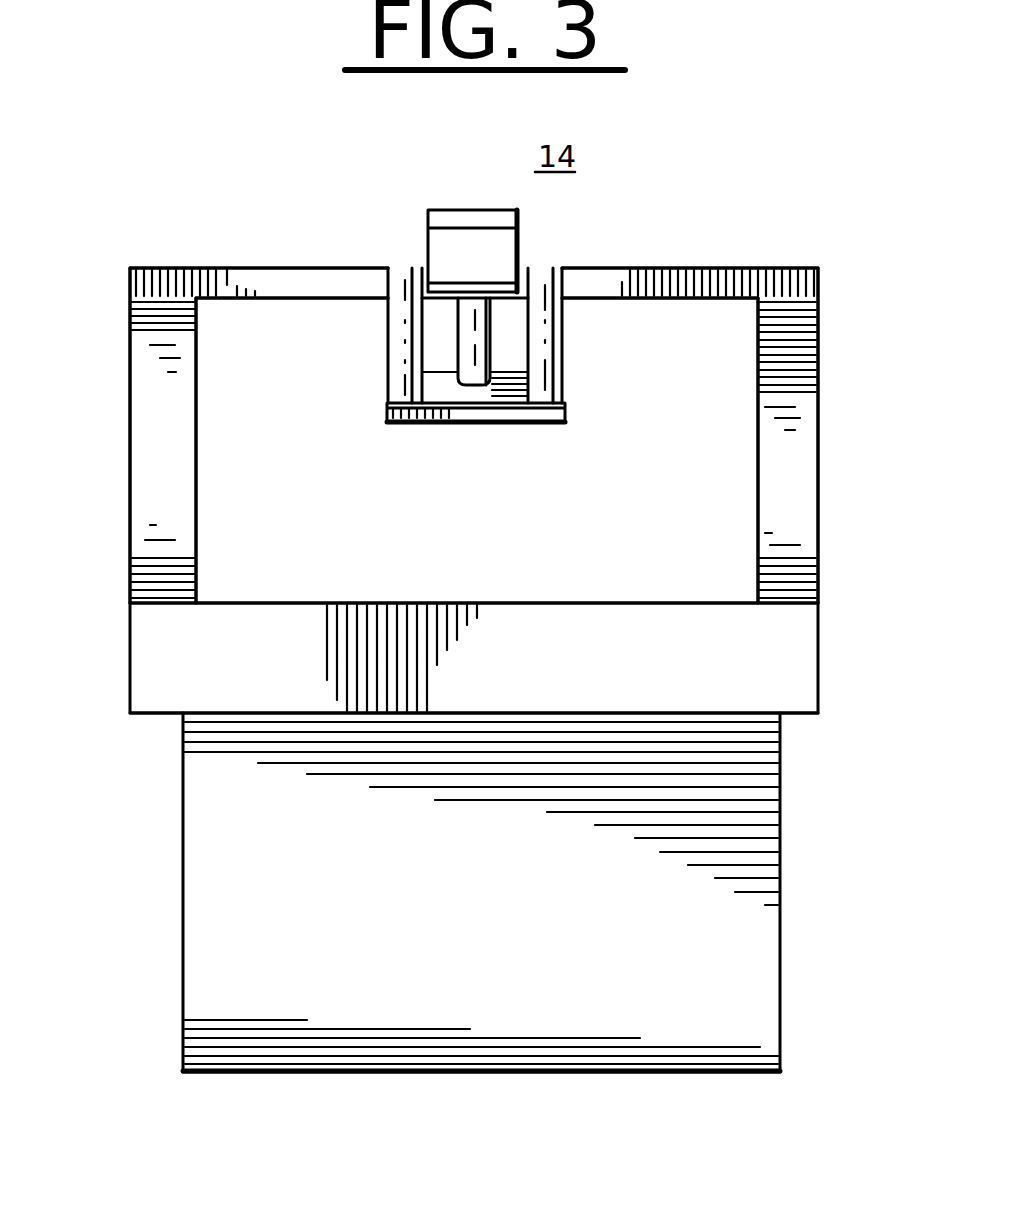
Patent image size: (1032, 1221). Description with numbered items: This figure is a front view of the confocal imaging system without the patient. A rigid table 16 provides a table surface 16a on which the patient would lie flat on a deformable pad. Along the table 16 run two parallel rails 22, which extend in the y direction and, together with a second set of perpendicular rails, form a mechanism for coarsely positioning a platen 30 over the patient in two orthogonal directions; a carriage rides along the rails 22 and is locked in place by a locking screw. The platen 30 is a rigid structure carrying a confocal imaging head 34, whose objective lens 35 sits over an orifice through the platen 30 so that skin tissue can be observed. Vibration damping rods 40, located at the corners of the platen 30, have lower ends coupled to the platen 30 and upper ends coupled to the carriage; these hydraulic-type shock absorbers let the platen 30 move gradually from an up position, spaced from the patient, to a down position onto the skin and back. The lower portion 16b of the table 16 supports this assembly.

The rigid table 16 is at (818, 665).
The table surface 16a is at (128, 366).
The frame bottom plate 16b is at (630, 603).
The rails 22 is at (818, 280).
The platen 30 is at (449, 423).
The confocal imaging head 34 is at (448, 250).
The objective lens 35 is at (490, 337).
The vibration damping rods 40 is at (388, 327).